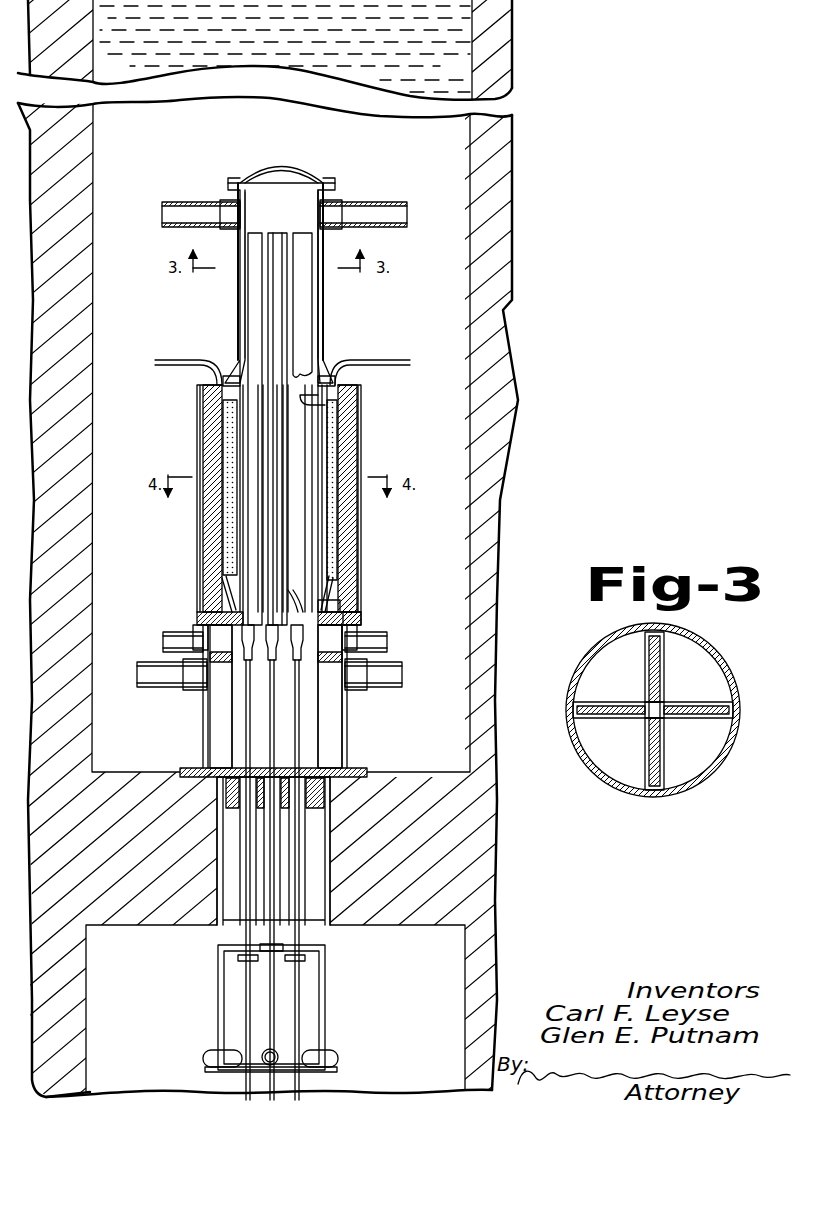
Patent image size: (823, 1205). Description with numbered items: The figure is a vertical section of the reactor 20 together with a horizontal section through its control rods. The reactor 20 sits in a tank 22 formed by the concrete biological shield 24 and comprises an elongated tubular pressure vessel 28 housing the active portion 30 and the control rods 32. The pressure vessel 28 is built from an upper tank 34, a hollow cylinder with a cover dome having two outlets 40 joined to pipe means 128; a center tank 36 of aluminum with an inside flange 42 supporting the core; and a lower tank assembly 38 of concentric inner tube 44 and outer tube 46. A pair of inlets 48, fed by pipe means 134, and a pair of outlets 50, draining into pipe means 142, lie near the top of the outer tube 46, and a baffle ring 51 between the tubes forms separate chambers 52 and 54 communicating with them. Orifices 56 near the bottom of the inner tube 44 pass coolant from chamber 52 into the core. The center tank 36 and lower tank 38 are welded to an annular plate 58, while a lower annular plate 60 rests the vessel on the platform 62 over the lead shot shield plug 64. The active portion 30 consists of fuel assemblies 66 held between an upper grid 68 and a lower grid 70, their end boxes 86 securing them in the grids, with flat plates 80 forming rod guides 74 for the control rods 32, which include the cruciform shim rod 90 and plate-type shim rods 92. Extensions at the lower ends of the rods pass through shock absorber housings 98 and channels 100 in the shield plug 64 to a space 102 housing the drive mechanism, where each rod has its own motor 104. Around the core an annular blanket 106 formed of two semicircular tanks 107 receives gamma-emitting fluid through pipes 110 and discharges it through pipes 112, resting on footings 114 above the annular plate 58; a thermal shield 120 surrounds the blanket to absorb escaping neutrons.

In FIG. 2, the reactor 20 is at (388, 311).
In FIG. 2, the tank 22 is at (455, 78).
In FIG. 2, the concrete biological shield 24 is at (497, 258).
In FIG. 2, the pressure vessel 28 is at (236, 298).
In FIG. 2, the active portion 30 is at (280, 478).
In FIG. 2, the control rods 32 is at (300, 236).
In FIG. 3, the control rods 32 is at (690, 712).
In FIG. 2, the upper tank 34 is at (242, 313).
In FIG. 3, the upper tank 34 is at (720, 667).
In FIG. 2, the center tank 36 is at (228, 404).
In FIG. 2, the lower tank assembly 38 is at (200, 728).
In FIG. 2, the outlets 40 is at (228, 212).
In FIG. 2, the inside flange 42 is at (337, 605).
In FIG. 2, the inner tube 44 is at (320, 722).
In FIG. 2, the outer tube 46 is at (205, 718).
In FIG. 2, the inlets 48 is at (192, 691).
In FIG. 2, the outlets 50 is at (205, 637).
In FIG. 2, the baffle ring 51 is at (220, 663).
In FIG. 2, the chamber 52 is at (222, 740).
In FIG. 2, the chamber 54 is at (330, 663).
In FIG. 2, the orifices 56 is at (322, 742).
In FIG. 2, the annular plate 58 is at (355, 623).
In FIG. 2, the annular plate 60 is at (360, 769).
In FIG. 2, the platform 62 is at (447, 774).
In FIG. 2, the lead shot shield plug 64 is at (310, 832).
In FIG. 2, the fuel assemblies 66 is at (300, 520).
In FIG. 2, the upper grid 68 is at (222, 395).
In FIG. 2, the lower grid 70 is at (335, 590).
In FIG. 3, the rod guides 74 is at (600, 735).
In FIG. 3, the flat plates 80 is at (664, 768).
In FIG. 2, the end boxes 86 is at (330, 405).
In FIG. 2, the cruciform shim rod 90 is at (288, 312).
In FIG. 3, the cruciform shim rod 90 is at (660, 692).
In FIG. 2, the plate-type shim rods 92 is at (258, 352).
In FIG. 3, the plate-type shim rods 92 is at (648, 752).
In FIG. 2, the shock absorber housings 98 is at (302, 796).
In FIG. 2, the channels 100 is at (273, 860).
In FIG. 2, the space 102 is at (440, 955).
In FIG. 2, the motor 104 is at (222, 1052).
In FIG. 2, the blanket 106 is at (333, 447).
In FIG. 2, the semicircular tanks 107 is at (335, 545).
In FIG. 2, the pipes 110 is at (404, 361).
In FIG. 2, the pipes 112 is at (165, 364).
In FIG. 2, the footings 114 is at (222, 590).
In FIG. 2, the thermal shield 120 is at (210, 516).
In FIG. 2, the pipe means 128 is at (178, 212).
In FIG. 2, the pipe means 134 is at (160, 680).
In FIG. 2, the pipe means 142 is at (225, 613).